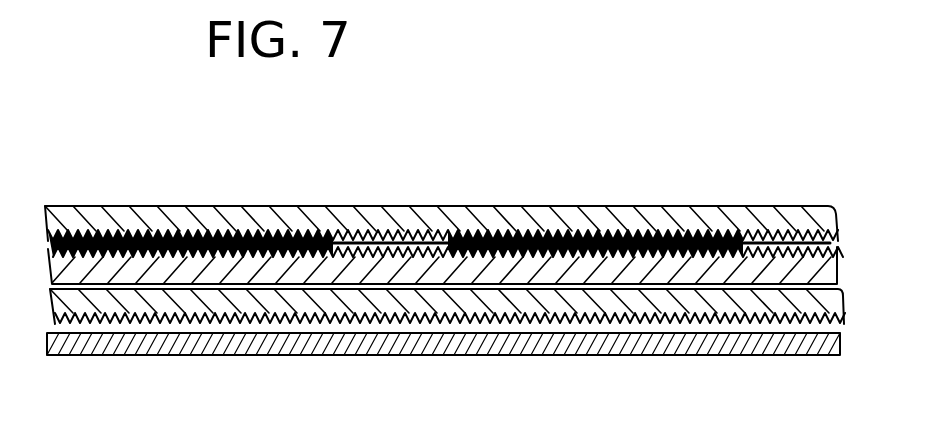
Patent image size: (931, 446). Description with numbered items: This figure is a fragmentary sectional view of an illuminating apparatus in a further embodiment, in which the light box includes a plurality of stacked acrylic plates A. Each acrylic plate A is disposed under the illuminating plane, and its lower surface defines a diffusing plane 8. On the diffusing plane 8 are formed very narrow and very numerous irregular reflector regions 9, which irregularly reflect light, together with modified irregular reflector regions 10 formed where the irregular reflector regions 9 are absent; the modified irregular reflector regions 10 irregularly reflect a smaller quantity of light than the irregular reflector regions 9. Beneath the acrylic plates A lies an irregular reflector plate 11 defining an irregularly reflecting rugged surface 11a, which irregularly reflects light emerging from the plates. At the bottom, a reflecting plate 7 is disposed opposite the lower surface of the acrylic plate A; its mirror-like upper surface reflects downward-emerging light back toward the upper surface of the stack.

The reflecting plate 7 is at (577, 340).
The diffusing plane 8 is at (242, 232).
The irregular reflector regions 9 is at (623, 255).
The modified irregular reflector regions 10 is at (738, 253).
The irregular reflector plate 11 is at (482, 303).
The irregularly reflecting rugged surface 11a is at (348, 320).
The acrylic plate A is at (463, 243).